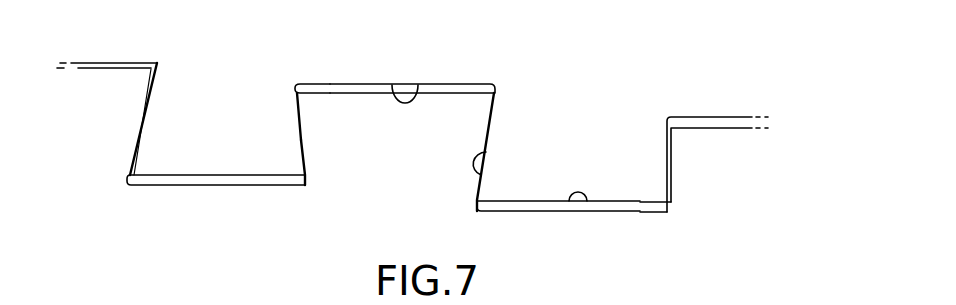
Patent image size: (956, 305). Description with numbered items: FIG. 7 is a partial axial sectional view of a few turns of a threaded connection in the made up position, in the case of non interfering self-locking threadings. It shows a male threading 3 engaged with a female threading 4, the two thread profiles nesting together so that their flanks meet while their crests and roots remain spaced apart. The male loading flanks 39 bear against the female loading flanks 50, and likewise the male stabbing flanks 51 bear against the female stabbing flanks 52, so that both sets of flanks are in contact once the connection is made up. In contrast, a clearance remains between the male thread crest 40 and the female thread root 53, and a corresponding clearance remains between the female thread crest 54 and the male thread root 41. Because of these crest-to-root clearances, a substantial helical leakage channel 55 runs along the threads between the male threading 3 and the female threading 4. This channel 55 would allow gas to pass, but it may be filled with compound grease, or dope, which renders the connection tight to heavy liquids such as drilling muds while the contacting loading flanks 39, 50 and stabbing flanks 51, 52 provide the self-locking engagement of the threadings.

The male threading 3 is at (374, 178).
The female threading 4 is at (602, 103).
The male loading flanks 39 is at (300, 130).
The male thread crest 40 is at (360, 85).
The male thread root 41 is at (587, 210).
The female loading flanks 50 is at (303, 147).
The male stabbing flanks 51 is at (482, 175).
The female stabbing flanks 52 is at (490, 130).
The female thread root 53 is at (417, 85).
The female thread crest 54 is at (530, 207).
The helical leakage channel 55 is at (320, 85).